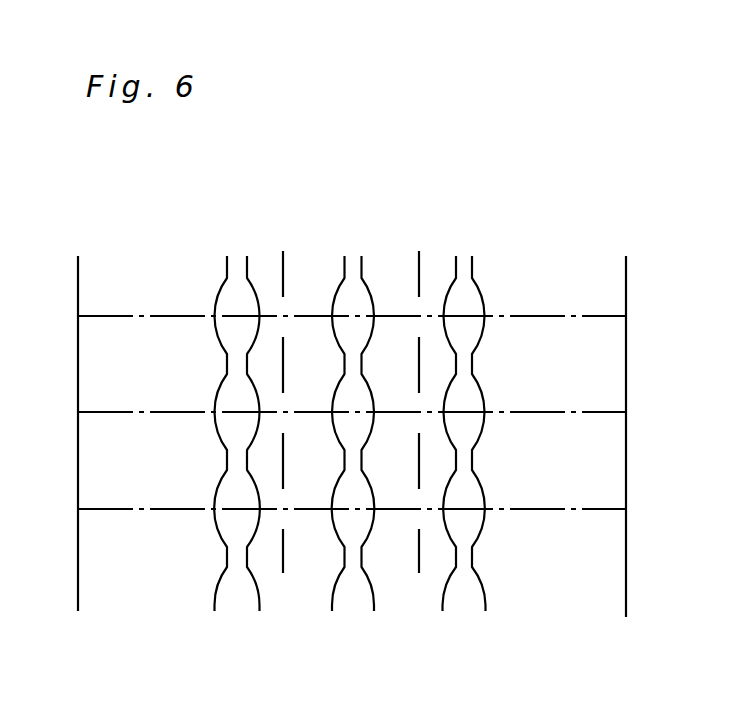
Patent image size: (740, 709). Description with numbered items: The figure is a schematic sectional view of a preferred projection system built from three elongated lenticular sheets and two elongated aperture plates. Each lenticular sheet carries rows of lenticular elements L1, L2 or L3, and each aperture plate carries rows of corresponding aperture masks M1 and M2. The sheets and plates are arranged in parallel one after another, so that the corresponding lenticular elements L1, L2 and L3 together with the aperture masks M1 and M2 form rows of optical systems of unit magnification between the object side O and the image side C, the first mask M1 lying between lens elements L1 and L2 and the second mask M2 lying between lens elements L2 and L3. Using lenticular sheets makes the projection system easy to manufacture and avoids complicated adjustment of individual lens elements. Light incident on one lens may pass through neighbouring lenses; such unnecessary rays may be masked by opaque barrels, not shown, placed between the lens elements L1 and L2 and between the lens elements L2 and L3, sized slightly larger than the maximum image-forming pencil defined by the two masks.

The object plane O is at (78, 587).
The image plane (carrier) C is at (626, 573).
The lenticular elements L1 is at (235, 600).
The lenticular elements L2 is at (353, 598).
The lenticular elements L3 is at (463, 598).
The aperture masks M1 is at (283, 573).
The aperture masks M2 is at (419, 573).